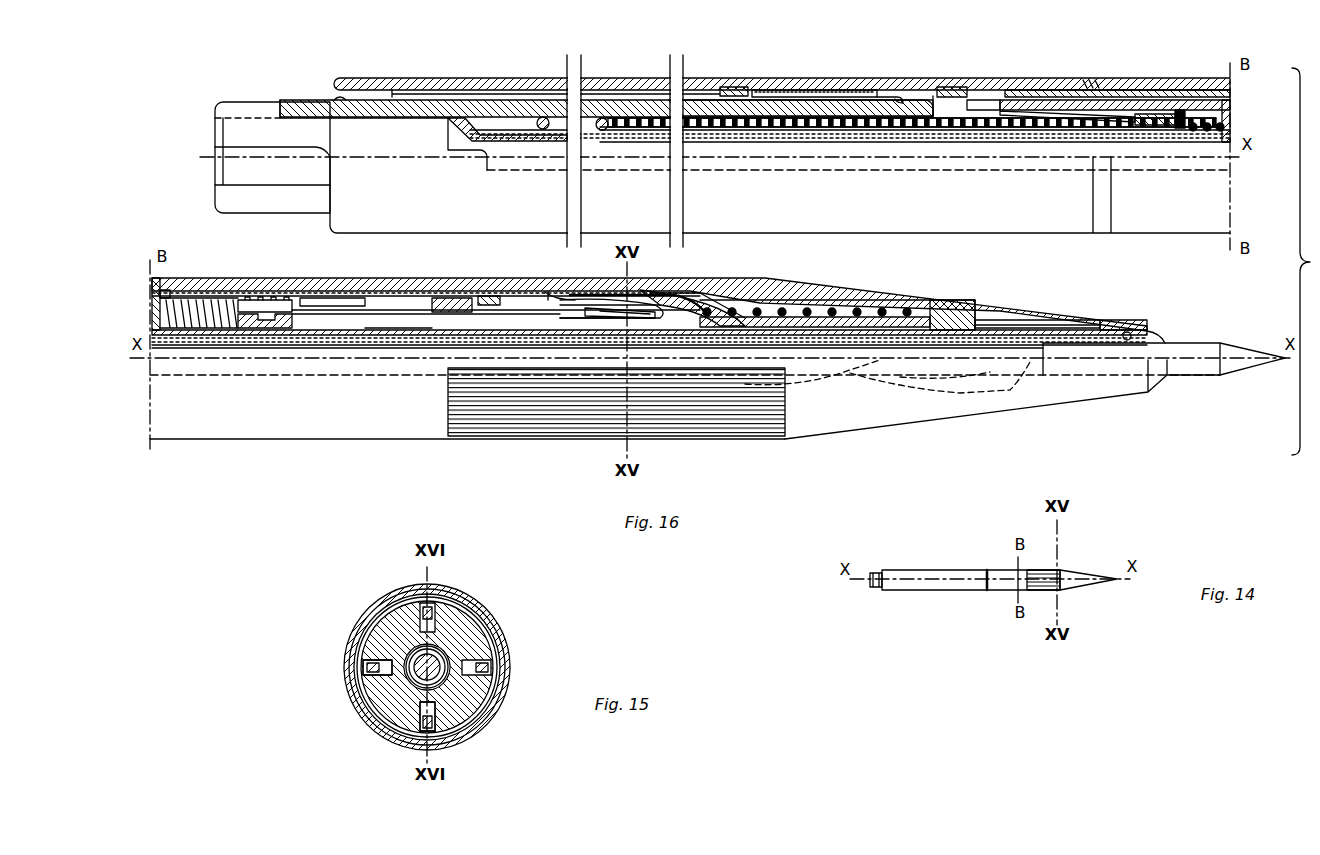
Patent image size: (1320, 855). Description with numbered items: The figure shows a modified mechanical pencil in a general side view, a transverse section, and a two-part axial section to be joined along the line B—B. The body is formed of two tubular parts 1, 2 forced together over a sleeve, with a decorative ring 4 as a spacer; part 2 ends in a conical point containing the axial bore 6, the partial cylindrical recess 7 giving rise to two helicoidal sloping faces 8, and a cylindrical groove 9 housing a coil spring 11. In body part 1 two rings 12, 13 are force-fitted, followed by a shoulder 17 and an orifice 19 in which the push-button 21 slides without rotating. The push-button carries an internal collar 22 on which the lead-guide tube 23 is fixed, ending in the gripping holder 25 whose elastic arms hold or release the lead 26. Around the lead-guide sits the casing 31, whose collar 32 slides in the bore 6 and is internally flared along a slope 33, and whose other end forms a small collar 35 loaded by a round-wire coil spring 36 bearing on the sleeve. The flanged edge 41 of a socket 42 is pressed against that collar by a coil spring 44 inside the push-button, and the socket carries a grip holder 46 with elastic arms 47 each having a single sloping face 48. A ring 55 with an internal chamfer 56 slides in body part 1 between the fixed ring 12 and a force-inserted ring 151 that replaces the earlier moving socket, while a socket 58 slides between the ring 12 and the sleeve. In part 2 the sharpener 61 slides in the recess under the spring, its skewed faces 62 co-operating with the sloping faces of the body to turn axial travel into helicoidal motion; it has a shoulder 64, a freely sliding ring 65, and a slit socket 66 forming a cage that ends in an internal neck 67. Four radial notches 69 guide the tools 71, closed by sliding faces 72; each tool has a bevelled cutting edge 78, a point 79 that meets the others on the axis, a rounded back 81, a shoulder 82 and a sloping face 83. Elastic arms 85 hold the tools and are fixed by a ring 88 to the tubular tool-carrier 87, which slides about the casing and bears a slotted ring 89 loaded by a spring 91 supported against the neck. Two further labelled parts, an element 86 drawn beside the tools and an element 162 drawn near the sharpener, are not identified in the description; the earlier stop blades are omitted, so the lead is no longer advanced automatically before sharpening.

In FIG. 16, the body part 1 is at (366, 78).
In FIG. 14, the body part 1 is at (950, 575).
In FIG. 16, the body part 2 is at (205, 280).
In FIG. 15, the body part 2 is at (503, 690).
In FIG. 14, the body part 2 is at (1032, 575).
In FIG. 16, the decorative ring 4 is at (1125, 90).
In FIG. 14, the decorative ring 4 is at (990, 572).
In FIG. 16, the axial bore 6 is at (1035, 328).
In FIG. 16, the partial cylindrical recess 7 is at (940, 318).
In FIG. 16, the sloping faces 8 is at (1005, 325).
In FIG. 16, the cylindrical groove 9 is at (895, 310).
In FIG. 16, the coil spring 11 is at (780, 382).
In FIG. 16, the ring 12 is at (960, 88).
In FIG. 16, the ring 13 is at (785, 100).
In FIG. 16, the shoulder 17 is at (408, 90).
In FIG. 16, the orifice 19 is at (338, 100).
In FIG. 16, the push-button 21 is at (265, 130).
In FIG. 14, the push-button 21 is at (880, 572).
In FIG. 16, the internal collar 22 is at (488, 100).
In FIG. 15, the lead-guide tube 23 is at (398, 622).
In FIG. 16, the gripping holder 25 is at (1163, 338).
In FIG. 16, the lead 26 is at (1195, 372).
In FIG. 15, the lead 26 is at (477, 650).
In FIG. 14, the lead 26 is at (1105, 582).
In FIG. 15, the casing 31 is at (385, 712).
In FIG. 16, the cylindrical collar 32 is at (1085, 322).
In FIG. 16, the slope 33 is at (1131, 333).
In FIG. 16, the small collar 35 is at (625, 132).
In FIG. 16, the coil spring 36 is at (800, 143).
In FIG. 16, the internal flanged edge 41 is at (612, 118).
In FIG. 16, the socket 42 is at (915, 115).
In FIG. 16, the coil spring 44 is at (545, 116).
In FIG. 16, the grip holder 46 is at (1165, 114).
In FIG. 16, the elastic arms 47 is at (1050, 118).
In FIG. 16, the sloping face 48 is at (1008, 100).
In FIG. 16, the ring 55 is at (820, 90).
In FIG. 16, the chamfer 56 is at (882, 97).
In FIG. 16, the socket 58 is at (1092, 88).
In FIG. 16, the sharpener 61 is at (740, 300).
In FIG. 15, the sharpener 61 is at (470, 708).
In FIG. 16, the skewed faces 62 is at (820, 310).
In FIG. 16, the shoulder 64 is at (583, 306).
In FIG. 16, the ring 65 is at (492, 296).
In FIG. 16, the socket 66 is at (372, 310).
In FIG. 16, the internal neck 67 is at (152, 318).
In FIG. 15, the notches 69 is at (492, 660).
In FIG. 16, the tool 71 is at (645, 300).
In FIG. 15, the tool 71 is at (492, 668).
In FIG. 16, the sliding faces 72 is at (705, 295).
In FIG. 15, the sliding faces 72 is at (370, 688).
In FIG. 16, the bevelled cutting-edge 78 is at (600, 320).
In FIG. 16, the point 79 is at (655, 320).
In FIG. 16, the convex rounded portion 81 is at (690, 300).
In FIG. 16, the shoulder 82 is at (550, 302).
In FIG. 16, the sloping face 83 is at (556, 292).
In FIG. 16, the elastic arms 85 is at (444, 298).
In FIG. 16, the rod 86 is at (570, 306).
In FIG. 16, the tool-carrier 87 is at (292, 318).
In FIG. 16, the ring 88 is at (266, 300).
In FIG. 16, the ring 89 is at (332, 298).
In FIG. 16, the spring 91 is at (232, 298).
In FIG. 16, the ring 151 is at (736, 88).
In FIG. 16, the guide piece 162 is at (922, 318).